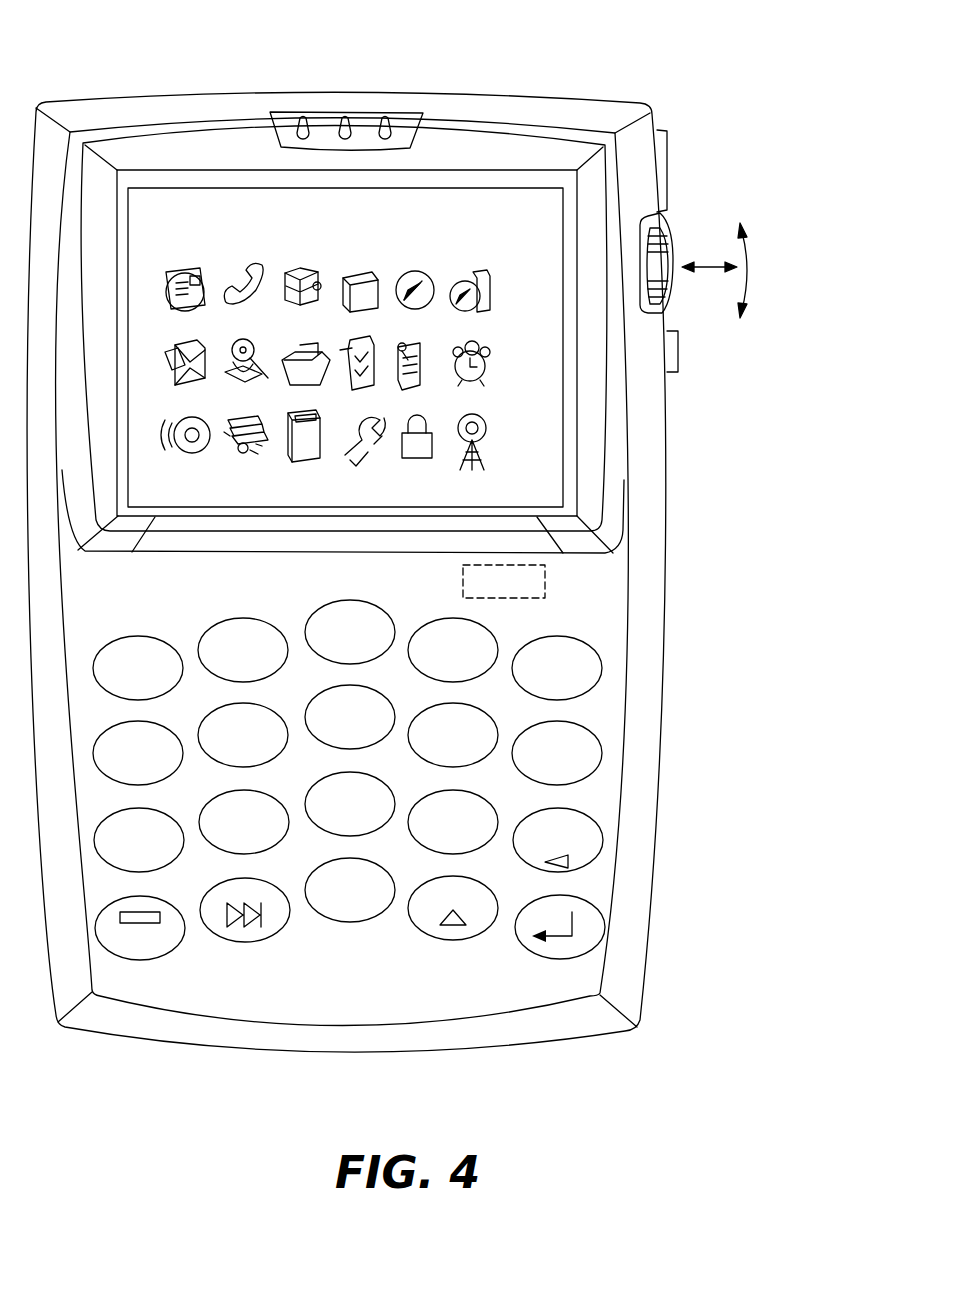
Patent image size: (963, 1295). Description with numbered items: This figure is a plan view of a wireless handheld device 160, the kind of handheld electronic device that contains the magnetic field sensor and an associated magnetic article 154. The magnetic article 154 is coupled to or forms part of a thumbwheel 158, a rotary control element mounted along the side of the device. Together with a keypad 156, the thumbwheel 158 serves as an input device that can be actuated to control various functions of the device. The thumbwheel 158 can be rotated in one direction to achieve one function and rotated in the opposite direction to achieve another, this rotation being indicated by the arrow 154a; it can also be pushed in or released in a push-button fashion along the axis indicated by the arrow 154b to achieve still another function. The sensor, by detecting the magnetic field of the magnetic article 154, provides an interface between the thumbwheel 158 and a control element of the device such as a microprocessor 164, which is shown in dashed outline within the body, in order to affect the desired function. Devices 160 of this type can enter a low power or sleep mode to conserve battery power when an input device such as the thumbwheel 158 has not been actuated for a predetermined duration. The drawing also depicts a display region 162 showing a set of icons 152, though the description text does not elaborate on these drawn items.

The application icons 152 is at (488, 262).
The magnetic article 154 is at (650, 273).
The arrow indicating rotation 154a is at (748, 258).
The arrow indicating push-button axis 154b is at (715, 266).
The keypad 156 is at (597, 724).
The thumbwheel 158 is at (658, 235).
The wireless handheld device 160 is at (157, 76).
The display screen 162 is at (548, 259).
The microprocessor 164 is at (504, 581).